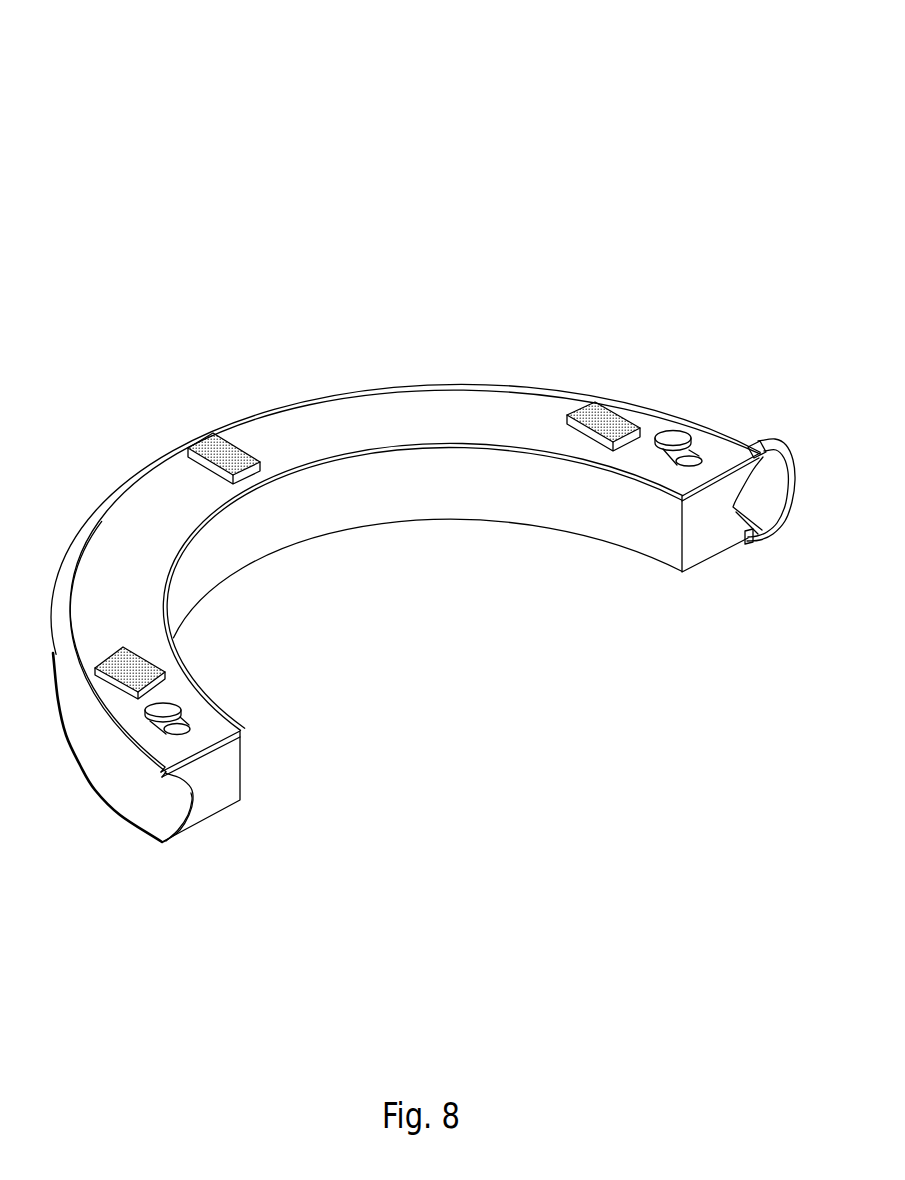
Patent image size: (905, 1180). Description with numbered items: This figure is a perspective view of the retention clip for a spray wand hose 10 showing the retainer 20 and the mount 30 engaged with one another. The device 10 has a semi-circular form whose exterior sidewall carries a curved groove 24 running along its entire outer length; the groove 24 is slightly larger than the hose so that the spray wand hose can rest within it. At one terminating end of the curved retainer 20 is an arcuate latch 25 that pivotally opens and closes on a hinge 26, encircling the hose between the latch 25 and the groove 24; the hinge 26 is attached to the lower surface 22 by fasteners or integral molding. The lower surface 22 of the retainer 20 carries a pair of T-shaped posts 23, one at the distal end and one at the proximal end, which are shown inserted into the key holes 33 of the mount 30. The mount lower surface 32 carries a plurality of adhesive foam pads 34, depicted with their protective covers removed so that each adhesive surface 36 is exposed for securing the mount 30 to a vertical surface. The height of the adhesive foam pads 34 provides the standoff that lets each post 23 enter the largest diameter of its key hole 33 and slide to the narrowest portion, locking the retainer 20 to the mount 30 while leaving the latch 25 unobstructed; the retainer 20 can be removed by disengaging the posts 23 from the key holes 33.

The retention clip for a spray wand hose 10 is at (113, 100).
The retainer 20 is at (403, 551).
The lower surface 22 is at (97, 517).
The post 23 is at (680, 431).
The curved groove 24 is at (188, 792).
The latch 25 is at (794, 497).
The hinge 26 is at (758, 444).
The mount 30 is at (143, 364).
The mount lower surface 32 is at (383, 420).
The key hole 33 is at (697, 453).
The adhesive foam pad 34 is at (192, 447).
The adhesive surface 36 is at (217, 438).